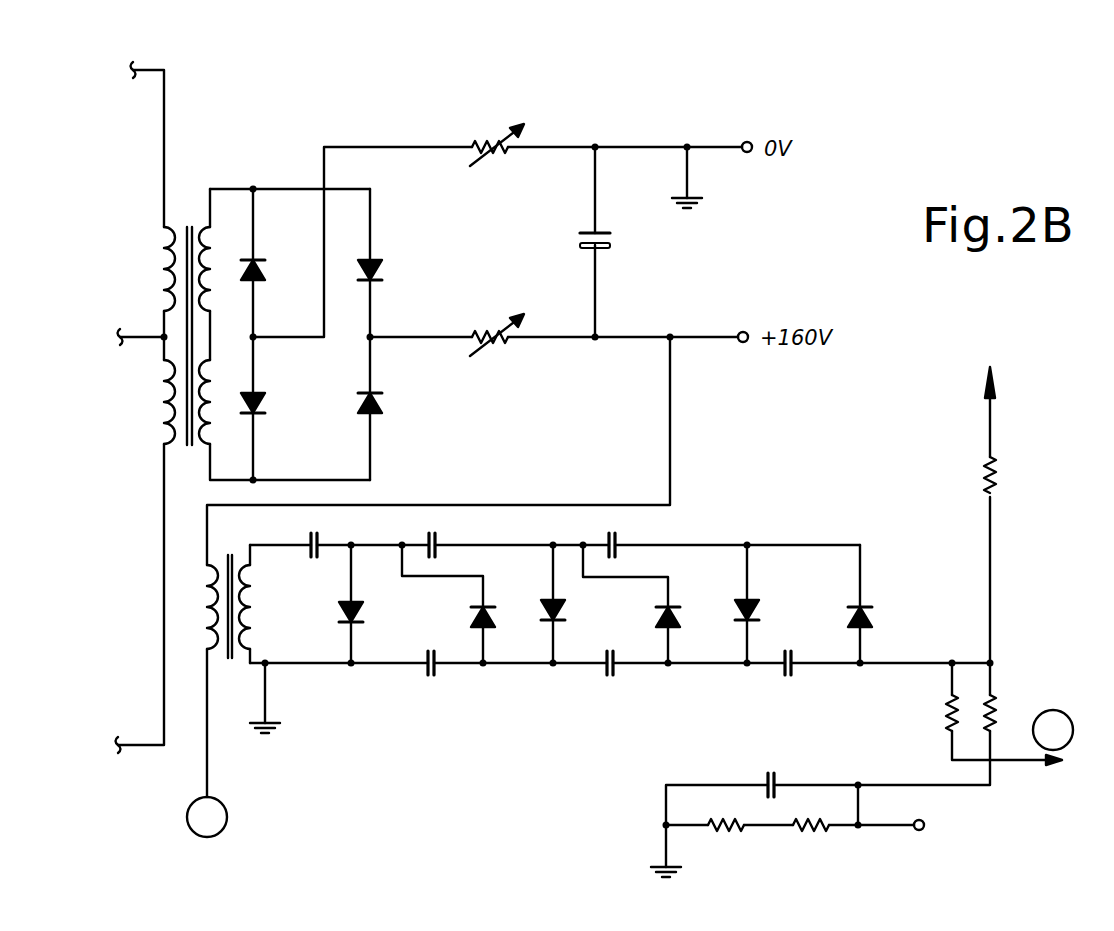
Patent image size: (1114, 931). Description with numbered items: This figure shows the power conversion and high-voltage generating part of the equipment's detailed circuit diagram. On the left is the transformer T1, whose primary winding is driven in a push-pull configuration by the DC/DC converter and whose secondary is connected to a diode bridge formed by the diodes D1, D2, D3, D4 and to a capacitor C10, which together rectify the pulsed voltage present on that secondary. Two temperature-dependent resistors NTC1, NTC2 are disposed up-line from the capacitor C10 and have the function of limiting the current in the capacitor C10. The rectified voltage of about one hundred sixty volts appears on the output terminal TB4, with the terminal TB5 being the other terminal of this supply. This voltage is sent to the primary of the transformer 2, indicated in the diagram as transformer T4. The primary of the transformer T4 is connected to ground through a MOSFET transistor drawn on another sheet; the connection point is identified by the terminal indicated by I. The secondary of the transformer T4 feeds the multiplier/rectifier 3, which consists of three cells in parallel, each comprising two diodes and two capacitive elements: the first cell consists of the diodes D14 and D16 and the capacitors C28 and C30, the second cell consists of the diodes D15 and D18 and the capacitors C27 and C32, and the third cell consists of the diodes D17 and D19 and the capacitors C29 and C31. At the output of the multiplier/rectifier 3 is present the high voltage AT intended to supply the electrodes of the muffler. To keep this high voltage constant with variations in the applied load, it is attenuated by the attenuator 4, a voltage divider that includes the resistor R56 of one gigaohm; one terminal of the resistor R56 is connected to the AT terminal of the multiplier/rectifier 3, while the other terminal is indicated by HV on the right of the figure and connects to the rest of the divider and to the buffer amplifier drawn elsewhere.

The transformer T1 is at (243, 407).
The diode D1 is at (385, 408).
The diode D2 is at (267, 408).
The diode D3 is at (386, 263).
The diode D4 is at (267, 263).
The temperature-dependent resistor NTC1 is at (490, 325).
The temperature-dependent resistor NTC2 is at (491, 132).
The capacitor C10 is at (579, 242).
The output terminal TB4 is at (738, 322).
The terminal TB5 is at (740, 132).
The transformer T4 is at (227, 671).
The transformer 2 is at (231, 699).
The multiplier/rectifier 3 is at (620, 614).
The attenuator 4 is at (934, 739).
The capacitor C30 is at (292, 534).
The capacitor C27 is at (458, 534).
The capacitor C29 is at (639, 534).
The capacitor C28 is at (413, 653).
The capacitor C32 is at (609, 653).
The capacitor C31 is at (792, 654).
The diode D14 is at (323, 604).
The diode D15 is at (577, 604).
The diode D16 is at (448, 604).
The diode D17 is at (772, 604).
The diode D18 is at (652, 604).
The diode D19 is at (881, 604).
The resistor R56 is at (856, 770).
The high voltage terminal AT is at (997, 497).
The HV terminal HV is at (1053, 730).
The terminal I is at (207, 817).